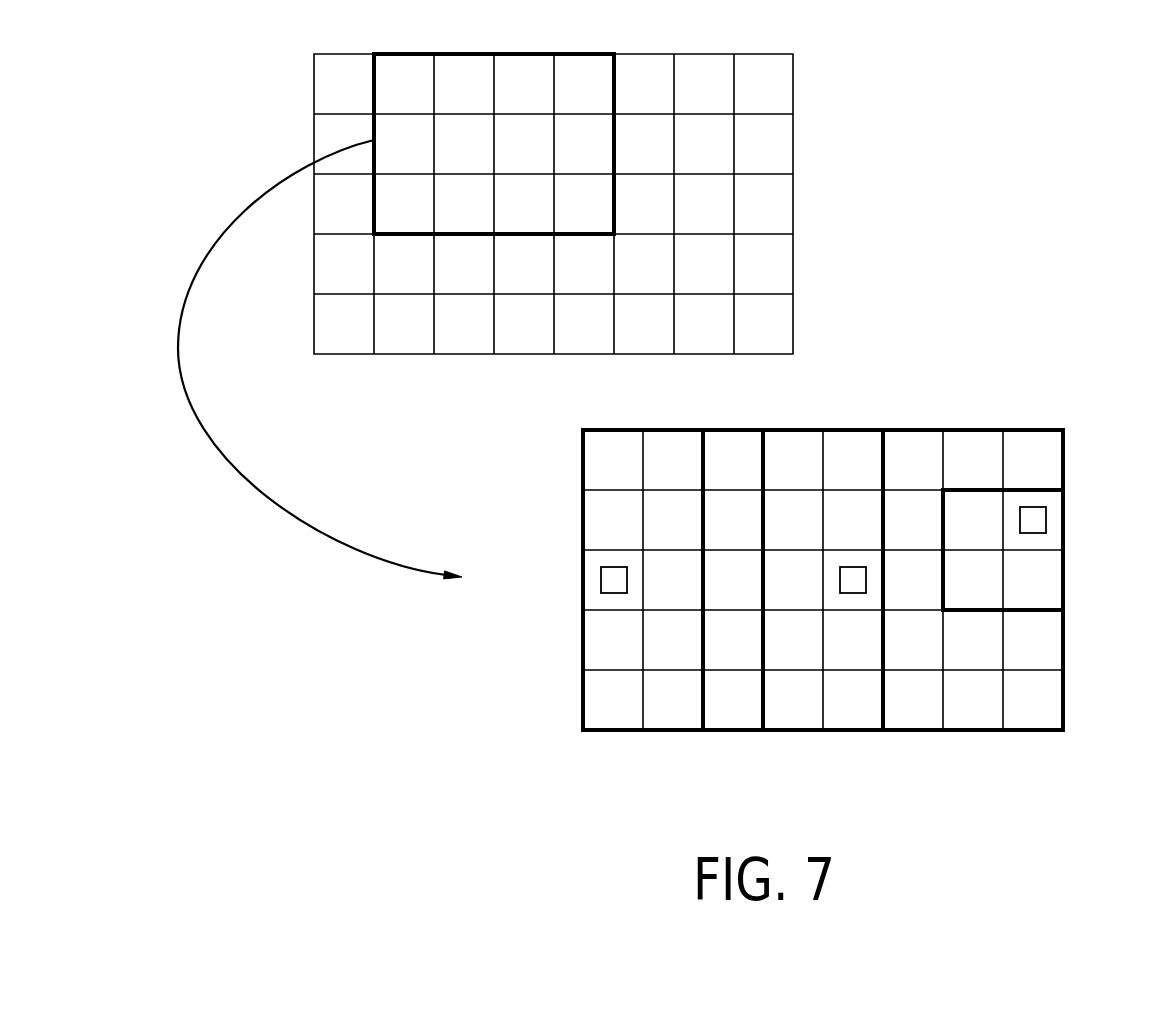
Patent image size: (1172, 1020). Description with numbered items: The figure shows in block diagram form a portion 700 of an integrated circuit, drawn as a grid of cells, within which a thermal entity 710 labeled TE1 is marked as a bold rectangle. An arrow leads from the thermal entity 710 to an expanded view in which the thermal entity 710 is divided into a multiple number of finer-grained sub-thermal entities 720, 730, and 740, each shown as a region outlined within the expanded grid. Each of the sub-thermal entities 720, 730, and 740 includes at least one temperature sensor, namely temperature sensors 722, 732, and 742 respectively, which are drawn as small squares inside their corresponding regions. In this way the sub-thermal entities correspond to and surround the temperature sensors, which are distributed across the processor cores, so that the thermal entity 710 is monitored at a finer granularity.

The portion of integrated circuit 700 is at (314, 84).
The thermal entity 710 is at (211, 454).
The sub-thermal entity 720 is at (583, 514).
The temperature sensor 722 is at (601, 580).
The sub-thermal entity 730 is at (793, 428).
The temperature sensor 732 is at (852, 567).
The sub-thermal entity 740 is at (1065, 589).
The temperature sensor 742 is at (1046, 519).